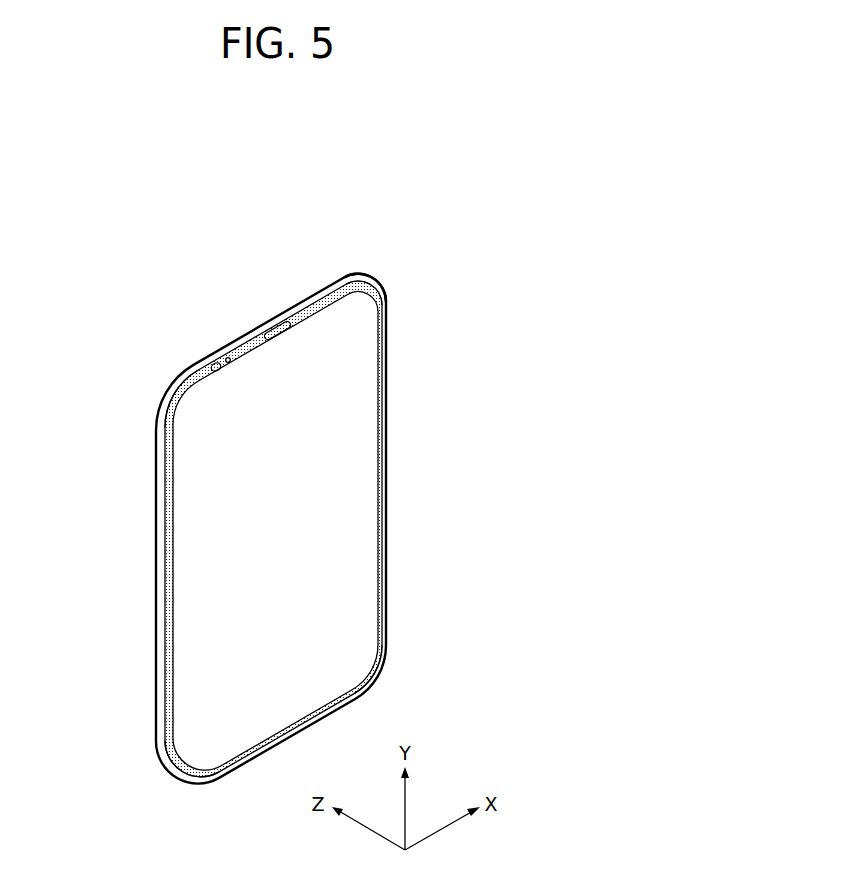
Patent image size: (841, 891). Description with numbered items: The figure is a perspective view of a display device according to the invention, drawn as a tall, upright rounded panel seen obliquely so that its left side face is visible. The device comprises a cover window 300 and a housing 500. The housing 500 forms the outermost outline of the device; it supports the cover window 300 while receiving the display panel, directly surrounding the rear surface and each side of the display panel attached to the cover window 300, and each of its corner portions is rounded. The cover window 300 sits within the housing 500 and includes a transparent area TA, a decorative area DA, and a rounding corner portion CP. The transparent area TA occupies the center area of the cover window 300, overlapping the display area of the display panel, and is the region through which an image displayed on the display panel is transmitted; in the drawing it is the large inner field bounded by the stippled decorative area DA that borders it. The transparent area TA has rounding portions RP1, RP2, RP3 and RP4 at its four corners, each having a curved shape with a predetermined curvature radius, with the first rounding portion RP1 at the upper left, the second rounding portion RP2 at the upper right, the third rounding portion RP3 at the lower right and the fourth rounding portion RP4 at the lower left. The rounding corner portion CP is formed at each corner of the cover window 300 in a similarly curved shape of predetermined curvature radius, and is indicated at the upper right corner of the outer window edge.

The housing 500 is at (155, 527).
The cover window 300 is at (165, 600).
The decorative area DA is at (383, 290).
The transparent area TA is at (360, 434).
The rounding corner portion CP is at (381, 281).
The rounding portion RP1 is at (181, 400).
The rounding portion RP2 is at (378, 302).
The rounding portion RP3 is at (377, 671).
The rounding portion RP4 is at (180, 780).